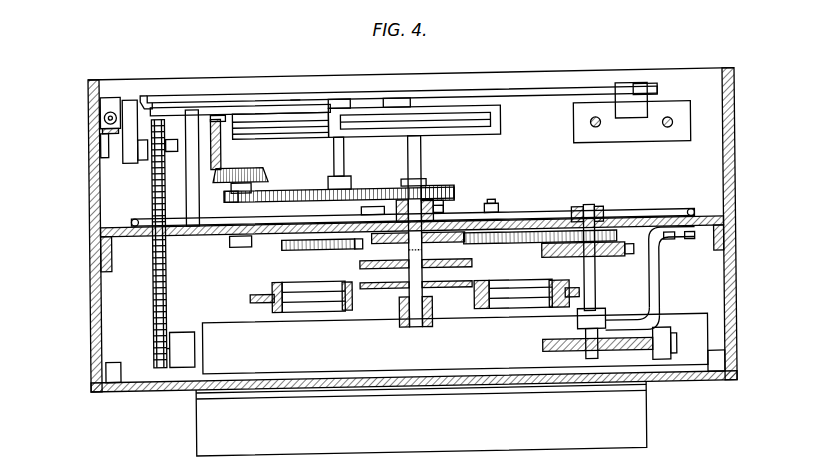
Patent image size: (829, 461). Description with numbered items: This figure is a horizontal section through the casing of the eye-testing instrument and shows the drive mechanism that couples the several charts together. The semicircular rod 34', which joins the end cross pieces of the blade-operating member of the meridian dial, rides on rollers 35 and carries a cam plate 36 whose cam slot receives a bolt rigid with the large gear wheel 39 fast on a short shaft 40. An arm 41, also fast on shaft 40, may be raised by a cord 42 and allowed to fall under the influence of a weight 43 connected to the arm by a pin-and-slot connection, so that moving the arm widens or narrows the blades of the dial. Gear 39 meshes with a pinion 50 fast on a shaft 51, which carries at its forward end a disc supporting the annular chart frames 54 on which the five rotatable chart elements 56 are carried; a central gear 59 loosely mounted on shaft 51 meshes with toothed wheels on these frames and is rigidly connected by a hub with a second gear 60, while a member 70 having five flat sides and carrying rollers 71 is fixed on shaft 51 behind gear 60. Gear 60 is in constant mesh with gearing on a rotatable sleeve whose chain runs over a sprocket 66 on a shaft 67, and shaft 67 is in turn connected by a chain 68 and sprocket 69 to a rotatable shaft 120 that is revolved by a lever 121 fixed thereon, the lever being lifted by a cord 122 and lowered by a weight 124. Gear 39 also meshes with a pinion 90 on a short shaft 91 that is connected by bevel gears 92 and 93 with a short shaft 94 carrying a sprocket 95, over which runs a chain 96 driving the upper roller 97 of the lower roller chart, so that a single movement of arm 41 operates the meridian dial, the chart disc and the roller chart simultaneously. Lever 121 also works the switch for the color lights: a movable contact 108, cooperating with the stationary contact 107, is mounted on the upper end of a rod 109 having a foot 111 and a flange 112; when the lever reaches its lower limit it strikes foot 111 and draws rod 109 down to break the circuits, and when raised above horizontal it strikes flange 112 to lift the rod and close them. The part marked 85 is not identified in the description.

The flange 112 is at (408, 249).
The foot 111 is at (127, 101).
The weight 124 is at (167, 92).
The cord 122 is at (185, 97).
The bevel gear 93 is at (213, 122).
The lever 121 is at (293, 104).
The shaft 51 is at (409, 148).
The arm 41 is at (523, 105).
The cord 42 is at (630, 110).
The weight 43 is at (640, 136).
The rod 109 is at (100, 106).
The movable contact 108 is at (100, 117).
The stationary contact 107 is at (99, 138).
The sprocket 95 is at (137, 154).
The short shaft 94 is at (172, 162).
The short shaft 91 is at (242, 158).
The bevel gear 92 is at (259, 171).
The rotatable shaft 120 is at (389, 149).
The short shaft 40 is at (332, 162).
The gear wheel 39 is at (284, 197).
The pinion 90 is at (236, 196).
The pinion 50 is at (427, 192).
The cam plate 36 is at (447, 197).
The member 70 is at (454, 222).
The rollers 35 is at (496, 211).
The semicircular rod 34' is at (203, 187).
The sprocket 69 is at (288, 254).
The rollers 71 is at (348, 252).
The second gear 60 is at (460, 270).
The chain 68 is at (503, 245).
The sprocket 66 is at (608, 260).
The shaft 67 is at (588, 302).
The chain 96 is at (161, 284).
The upper roller 97 is at (452, 329).
The chart frames 54 is at (275, 317).
The chart elements 56 is at (305, 319).
The central gear 59 is at (375, 288).
The bolt 85 is at (550, 356).